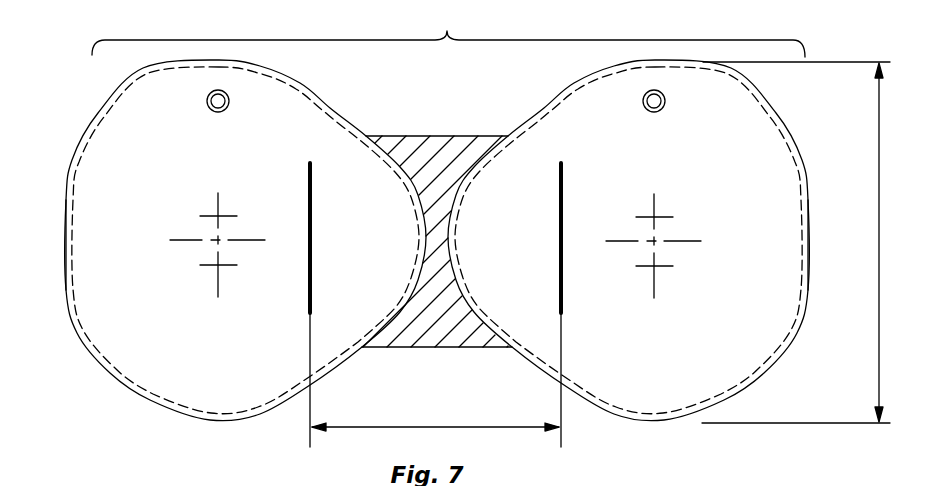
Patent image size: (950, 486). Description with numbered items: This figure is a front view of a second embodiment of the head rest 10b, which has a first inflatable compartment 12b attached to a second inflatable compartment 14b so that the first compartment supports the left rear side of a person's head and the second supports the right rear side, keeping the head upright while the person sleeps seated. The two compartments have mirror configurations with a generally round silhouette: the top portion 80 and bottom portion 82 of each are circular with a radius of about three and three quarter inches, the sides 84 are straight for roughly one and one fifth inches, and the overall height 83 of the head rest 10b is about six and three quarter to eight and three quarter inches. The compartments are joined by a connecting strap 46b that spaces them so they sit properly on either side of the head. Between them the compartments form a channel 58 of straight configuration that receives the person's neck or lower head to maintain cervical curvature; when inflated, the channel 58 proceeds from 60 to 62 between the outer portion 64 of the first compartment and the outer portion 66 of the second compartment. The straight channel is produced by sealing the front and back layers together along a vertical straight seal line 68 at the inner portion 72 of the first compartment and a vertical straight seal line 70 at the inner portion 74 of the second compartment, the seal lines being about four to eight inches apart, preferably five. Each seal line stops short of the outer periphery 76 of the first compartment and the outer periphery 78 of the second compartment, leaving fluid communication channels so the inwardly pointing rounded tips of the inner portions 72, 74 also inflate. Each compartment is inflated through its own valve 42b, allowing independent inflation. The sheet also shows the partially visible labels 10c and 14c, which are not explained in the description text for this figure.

The head rest 10b is at (448, 29).
The first inflatable compartment 12b is at (763, 100).
The second inflatable compartment 14b is at (110, 98).
The valve 42b is at (213, 90).
The connecting strap 46b is at (403, 313).
The channel 58 is at (510, 428).
The channel start 60 is at (533, 147).
The channel end 62 is at (520, 307).
The outer portion of first inflatable compartment 64 is at (777, 328).
The outer portion of second inflatable compartment 66 is at (96, 323).
The vertical straight seal line 68 is at (564, 176).
The vertical straight seal line 70 is at (307, 180).
The inner portion of first inflatable compartment 72 is at (485, 270).
The inner portion of second inflatable compartment 74 is at (389, 273).
The outer periphery of first compartment 76 is at (537, 110).
The outer periphery of second compartment 78 is at (347, 117).
The top portion 80 is at (100, 118).
The bottom portion 82 is at (123, 387).
The overall height 83 is at (878, 263).
The side 84 is at (63, 226).
The pad assembly (partial) 10c is at (572, 481).
The pad (partial) 14c is at (163, 481).